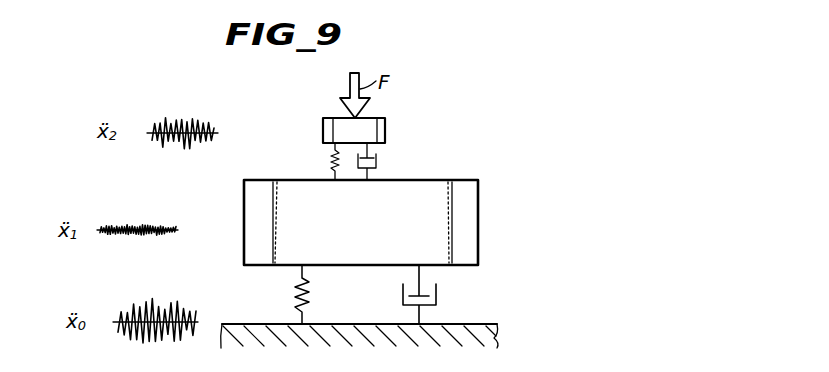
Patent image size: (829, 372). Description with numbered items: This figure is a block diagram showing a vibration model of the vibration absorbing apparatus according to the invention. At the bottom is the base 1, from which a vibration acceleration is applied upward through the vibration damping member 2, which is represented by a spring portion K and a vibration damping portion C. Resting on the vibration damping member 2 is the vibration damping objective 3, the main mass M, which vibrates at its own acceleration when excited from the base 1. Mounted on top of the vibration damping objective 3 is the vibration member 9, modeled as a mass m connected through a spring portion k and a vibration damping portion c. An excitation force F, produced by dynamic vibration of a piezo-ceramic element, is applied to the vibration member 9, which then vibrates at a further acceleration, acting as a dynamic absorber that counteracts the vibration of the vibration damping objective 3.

The base 1 is at (474, 324).
The vibration damping member 2 is at (272, 298).
The vibration damping objective 3 is at (479, 222).
The vibration member 9 is at (405, 172).